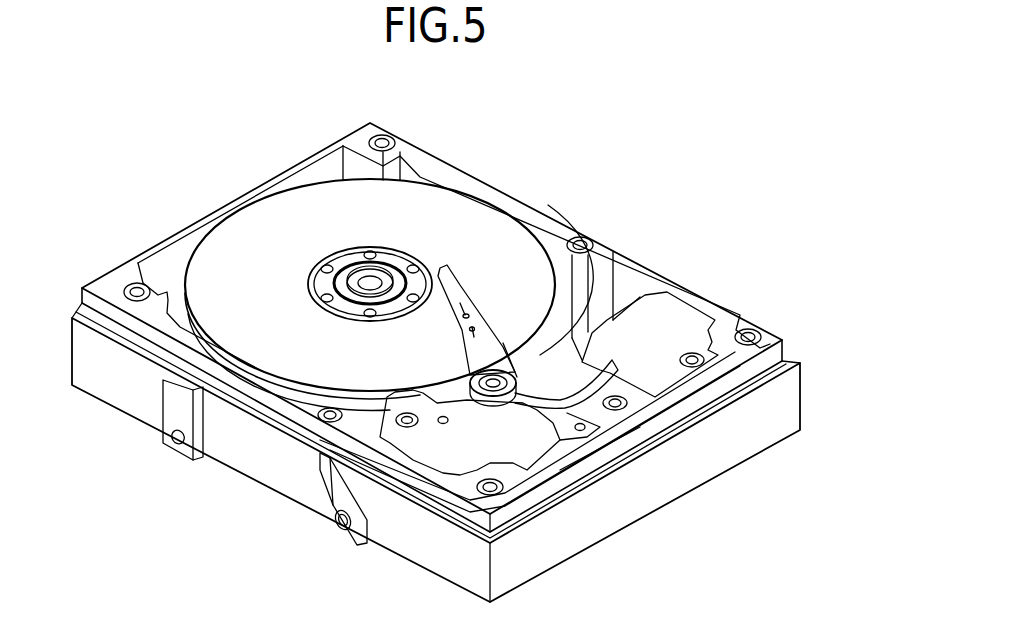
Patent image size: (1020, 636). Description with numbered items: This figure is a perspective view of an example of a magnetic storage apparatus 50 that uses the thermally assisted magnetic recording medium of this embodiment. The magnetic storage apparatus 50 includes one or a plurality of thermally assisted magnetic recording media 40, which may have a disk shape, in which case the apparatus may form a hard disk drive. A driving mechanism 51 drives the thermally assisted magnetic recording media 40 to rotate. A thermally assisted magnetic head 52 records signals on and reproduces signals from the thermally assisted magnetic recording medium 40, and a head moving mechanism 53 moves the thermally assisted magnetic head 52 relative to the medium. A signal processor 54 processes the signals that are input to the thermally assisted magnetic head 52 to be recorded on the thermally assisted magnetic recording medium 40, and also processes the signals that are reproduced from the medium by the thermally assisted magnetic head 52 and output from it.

The thermally assisted magnetic recording medium 40 is at (416, 200).
The magnetic storage apparatus 50 is at (596, 238).
The driving mechanism 51 is at (368, 280).
The thermally assisted magnetic head 52 is at (440, 267).
The head moving mechanism 53 is at (663, 330).
The signal processor 54 is at (508, 372).